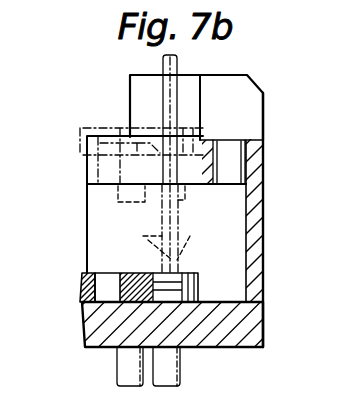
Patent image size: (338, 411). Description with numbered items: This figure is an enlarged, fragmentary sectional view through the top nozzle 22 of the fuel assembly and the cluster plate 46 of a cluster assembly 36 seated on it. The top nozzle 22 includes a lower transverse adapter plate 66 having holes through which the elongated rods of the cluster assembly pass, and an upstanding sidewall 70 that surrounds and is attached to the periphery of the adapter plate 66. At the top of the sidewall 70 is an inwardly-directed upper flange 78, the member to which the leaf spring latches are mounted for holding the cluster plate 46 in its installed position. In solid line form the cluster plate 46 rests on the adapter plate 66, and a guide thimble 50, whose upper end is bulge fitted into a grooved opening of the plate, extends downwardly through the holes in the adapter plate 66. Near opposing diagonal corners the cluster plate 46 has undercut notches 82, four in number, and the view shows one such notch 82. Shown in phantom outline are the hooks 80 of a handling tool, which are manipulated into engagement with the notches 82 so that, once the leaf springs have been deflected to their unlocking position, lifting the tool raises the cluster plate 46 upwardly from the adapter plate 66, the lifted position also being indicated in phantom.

The top nozzle 22 is at (265, 154).
The cluster assembly 36 is at (78, 288).
The cluster plate 46 is at (85, 127).
The guide thimble 50 is at (117, 370).
The adapter plate 66 is at (217, 350).
The upstanding sidewall 70 is at (265, 235).
The upper flange 78 is at (197, 188).
The hooks 80 is at (185, 257).
The undercut notches 82 is at (198, 284).